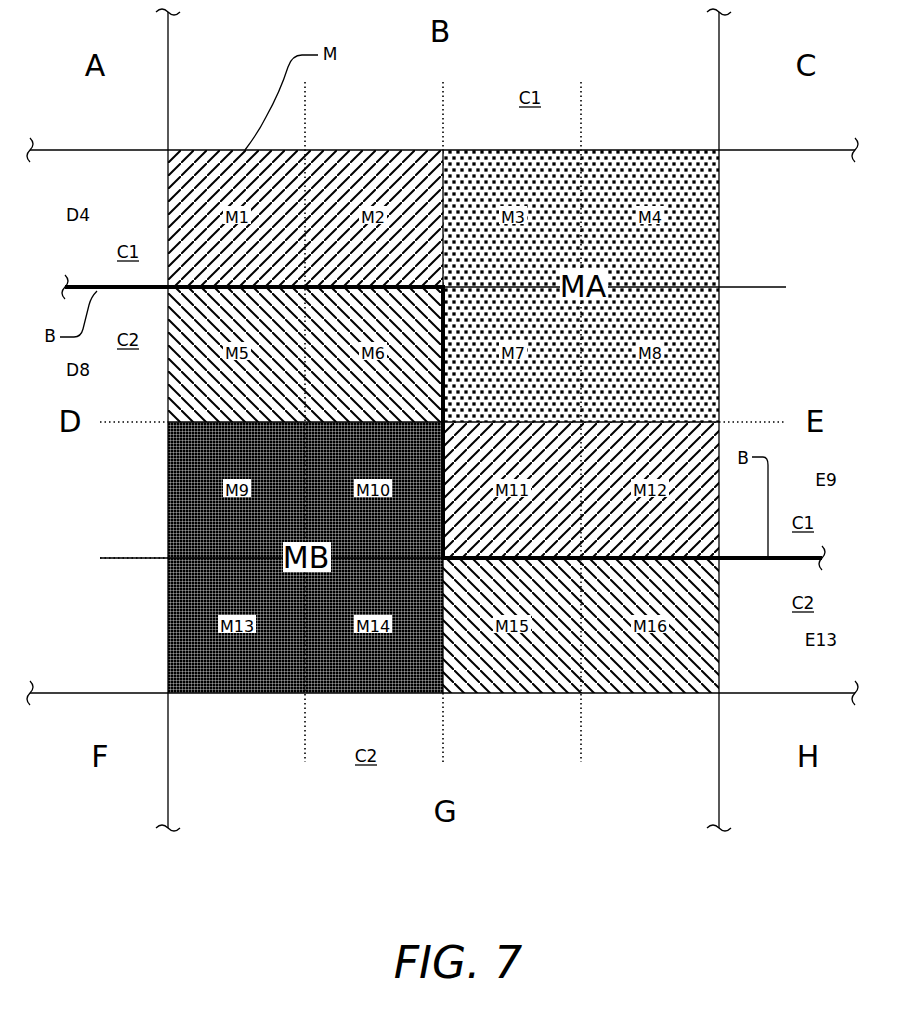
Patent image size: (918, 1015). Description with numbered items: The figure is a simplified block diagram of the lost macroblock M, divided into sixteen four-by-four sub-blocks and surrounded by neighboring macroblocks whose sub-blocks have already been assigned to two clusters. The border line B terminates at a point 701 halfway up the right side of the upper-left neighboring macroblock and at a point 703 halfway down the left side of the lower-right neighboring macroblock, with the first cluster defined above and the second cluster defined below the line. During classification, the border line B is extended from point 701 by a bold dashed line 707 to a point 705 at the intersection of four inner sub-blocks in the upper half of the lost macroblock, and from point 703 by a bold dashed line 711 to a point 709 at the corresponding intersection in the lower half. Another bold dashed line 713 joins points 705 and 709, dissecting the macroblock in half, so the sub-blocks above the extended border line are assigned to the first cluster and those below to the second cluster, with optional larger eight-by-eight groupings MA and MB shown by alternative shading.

The point 701 is at (168, 290).
The point 703 is at (720, 560).
The point 705 is at (443, 287).
The bold dashed line 707 is at (325, 287).
The point 709 is at (441, 560).
The bold dashed line 711 is at (576, 562).
The bold dashed line 713 is at (445, 351).